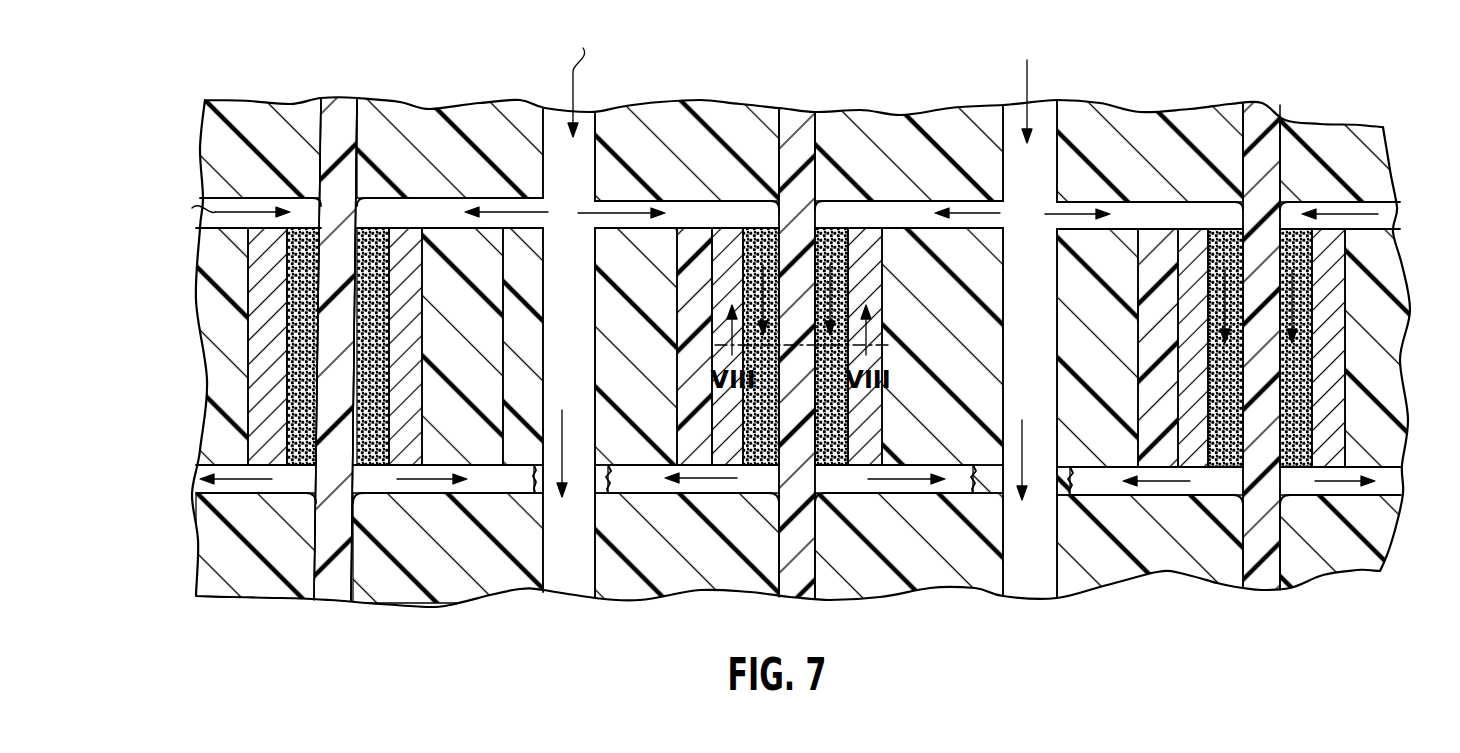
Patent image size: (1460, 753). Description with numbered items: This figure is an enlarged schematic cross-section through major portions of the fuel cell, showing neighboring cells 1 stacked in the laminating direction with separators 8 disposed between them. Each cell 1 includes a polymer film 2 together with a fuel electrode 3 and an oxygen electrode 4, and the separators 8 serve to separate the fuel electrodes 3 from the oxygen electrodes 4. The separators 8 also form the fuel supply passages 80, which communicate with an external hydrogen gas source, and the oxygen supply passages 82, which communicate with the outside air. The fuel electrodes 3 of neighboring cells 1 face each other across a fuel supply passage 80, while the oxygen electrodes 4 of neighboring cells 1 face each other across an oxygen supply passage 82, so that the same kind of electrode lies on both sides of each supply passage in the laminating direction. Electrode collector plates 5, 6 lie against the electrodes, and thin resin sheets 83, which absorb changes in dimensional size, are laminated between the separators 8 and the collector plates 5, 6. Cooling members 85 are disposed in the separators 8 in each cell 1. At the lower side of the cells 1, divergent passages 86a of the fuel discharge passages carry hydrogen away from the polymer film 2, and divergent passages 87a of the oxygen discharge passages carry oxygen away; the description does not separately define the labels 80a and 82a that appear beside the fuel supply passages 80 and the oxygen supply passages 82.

The cell 1 is at (341, 86).
The polymer film 2 is at (330, 123).
The fuel electrode 3 is at (298, 240).
The oxygen electrode 4 is at (373, 240).
The electrode collector plate 5 is at (250, 427).
The electrode collector plate 6 is at (398, 447).
The separator 8 is at (678, 537).
The fuel supply passage 80 is at (1023, 247).
The hydrogen supply passage 80a is at (895, 225).
The oxygen supply passage 82 is at (553, 143).
The oxygen supply passage 82a is at (677, 219).
The thin resin sheet 83 is at (700, 240).
The cooling member 85 is at (490, 447).
The divergent passage 86a is at (235, 487).
The divergent passage 87a is at (477, 483).